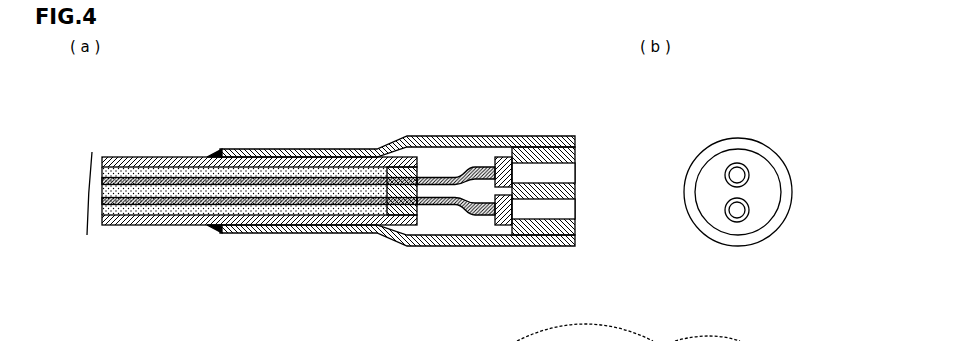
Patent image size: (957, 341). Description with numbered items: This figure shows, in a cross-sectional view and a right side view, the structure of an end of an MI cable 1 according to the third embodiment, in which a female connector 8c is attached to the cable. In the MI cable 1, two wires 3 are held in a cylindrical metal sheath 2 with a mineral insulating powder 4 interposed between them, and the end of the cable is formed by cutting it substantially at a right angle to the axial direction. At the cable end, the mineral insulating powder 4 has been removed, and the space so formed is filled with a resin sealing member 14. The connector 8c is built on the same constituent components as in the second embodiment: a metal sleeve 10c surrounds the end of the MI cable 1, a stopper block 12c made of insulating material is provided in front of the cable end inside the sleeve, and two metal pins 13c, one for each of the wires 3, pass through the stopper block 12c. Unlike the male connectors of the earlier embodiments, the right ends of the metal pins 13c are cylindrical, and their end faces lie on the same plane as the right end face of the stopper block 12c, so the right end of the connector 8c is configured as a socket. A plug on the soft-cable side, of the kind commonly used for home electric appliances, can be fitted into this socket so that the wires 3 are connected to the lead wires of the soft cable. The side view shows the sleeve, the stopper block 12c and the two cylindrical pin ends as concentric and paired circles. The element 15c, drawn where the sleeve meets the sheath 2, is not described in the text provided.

The MI cable 1 is at (259, 164).
The cylindrical metal sheath 2 is at (160, 157).
The wires 3 is at (253, 178).
The mineral insulating powder 4 is at (190, 210).
The connector 8c is at (478, 160).
The sleeve 10c is at (340, 148).
The stopper block 12c is at (555, 138).
The metal pins 13c is at (486, 160).
The resin sealing member 14 is at (418, 220).
The adhesive wedge 15c is at (212, 157).